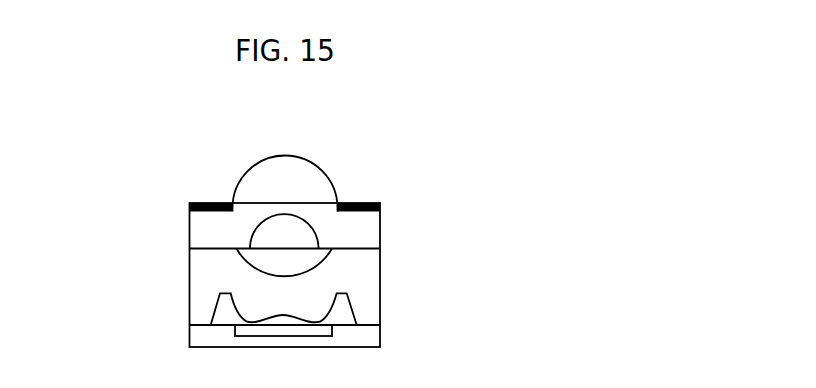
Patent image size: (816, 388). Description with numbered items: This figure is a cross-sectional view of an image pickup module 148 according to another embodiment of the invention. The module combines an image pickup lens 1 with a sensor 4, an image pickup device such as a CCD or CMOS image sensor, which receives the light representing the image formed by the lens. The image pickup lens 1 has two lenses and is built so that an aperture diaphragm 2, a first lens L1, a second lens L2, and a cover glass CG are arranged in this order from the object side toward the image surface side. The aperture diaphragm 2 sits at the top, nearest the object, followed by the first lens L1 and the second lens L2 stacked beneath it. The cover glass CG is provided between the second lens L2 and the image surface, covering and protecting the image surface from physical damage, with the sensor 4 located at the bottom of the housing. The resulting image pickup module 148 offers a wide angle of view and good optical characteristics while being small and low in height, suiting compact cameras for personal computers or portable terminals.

The image pickup module 148 is at (408, 168).
The aperture diaphragm 2 is at (368, 204).
The first lens L1 is at (368, 234).
The second lens L2 is at (368, 286).
The image pickup lens 1 is at (442, 188).
The cover glass CG is at (323, 330).
The sensor 4 is at (200, 333).